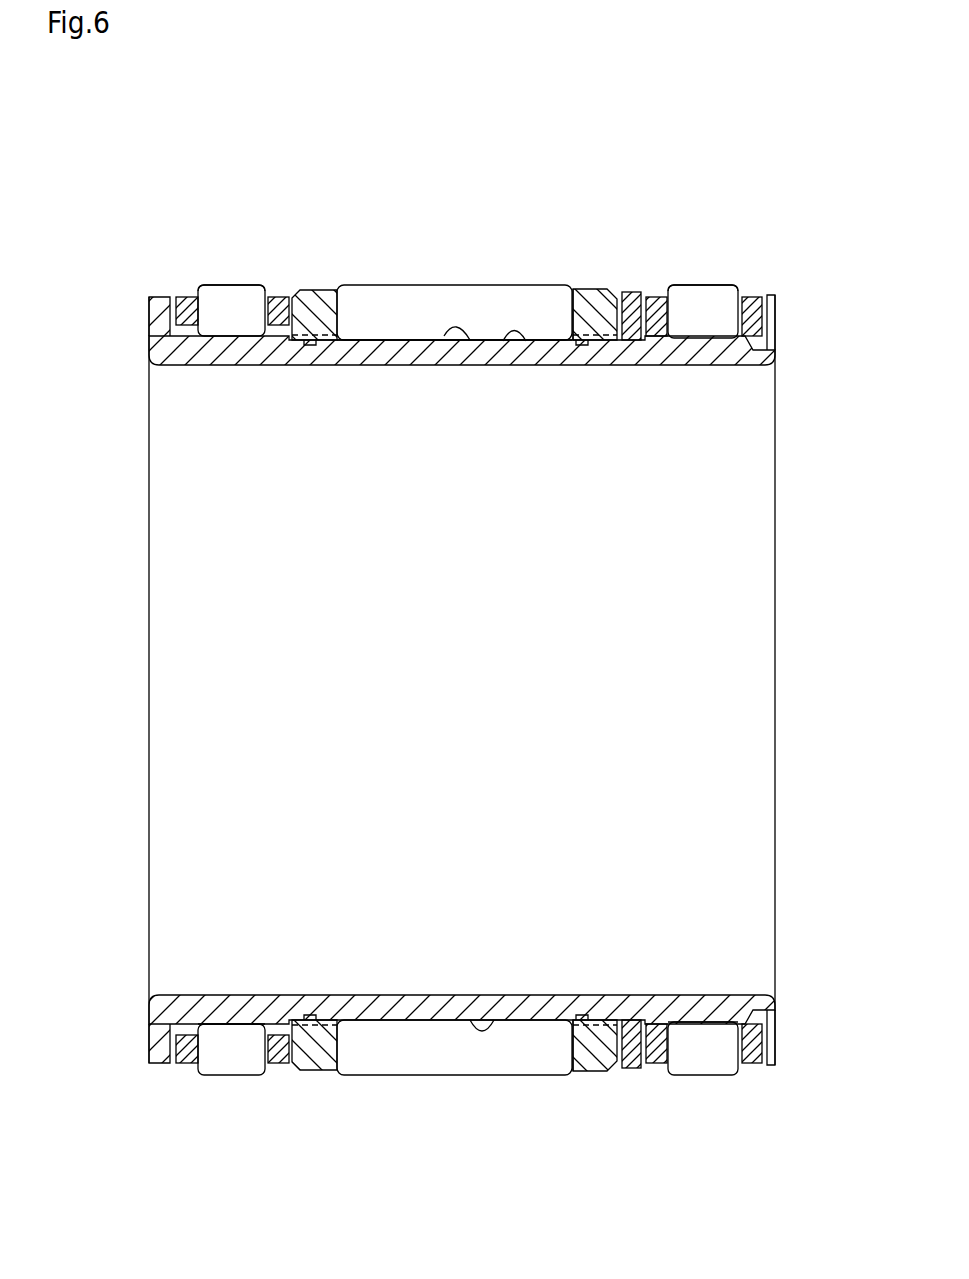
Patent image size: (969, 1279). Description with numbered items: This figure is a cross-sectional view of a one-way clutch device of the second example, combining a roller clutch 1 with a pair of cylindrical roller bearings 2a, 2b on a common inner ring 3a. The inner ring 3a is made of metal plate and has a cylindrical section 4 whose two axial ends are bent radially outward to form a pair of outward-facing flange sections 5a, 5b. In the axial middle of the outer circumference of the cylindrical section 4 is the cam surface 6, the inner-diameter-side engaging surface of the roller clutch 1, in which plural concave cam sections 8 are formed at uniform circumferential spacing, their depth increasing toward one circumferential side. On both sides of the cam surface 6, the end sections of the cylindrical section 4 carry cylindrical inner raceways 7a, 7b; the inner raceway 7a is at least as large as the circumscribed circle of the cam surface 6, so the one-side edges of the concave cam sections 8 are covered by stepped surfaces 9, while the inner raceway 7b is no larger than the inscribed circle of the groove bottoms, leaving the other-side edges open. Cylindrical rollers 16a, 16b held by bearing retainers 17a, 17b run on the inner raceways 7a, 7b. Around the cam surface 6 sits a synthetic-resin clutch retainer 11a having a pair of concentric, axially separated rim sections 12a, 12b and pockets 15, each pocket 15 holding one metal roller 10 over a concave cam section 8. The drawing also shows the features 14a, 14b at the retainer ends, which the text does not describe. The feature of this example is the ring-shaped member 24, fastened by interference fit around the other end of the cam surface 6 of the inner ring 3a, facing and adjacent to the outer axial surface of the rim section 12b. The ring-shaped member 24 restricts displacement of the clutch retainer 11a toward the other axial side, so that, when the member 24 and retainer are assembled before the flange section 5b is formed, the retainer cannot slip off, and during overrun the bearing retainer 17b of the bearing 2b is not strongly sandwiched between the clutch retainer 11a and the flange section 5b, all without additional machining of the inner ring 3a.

The roller clutch 1 is at (448, 285).
The cylindrical roller bearing 2a is at (218, 287).
The cylindrical roller bearing 2b is at (716, 285).
The inner ring 3a is at (394, 354).
The cylindrical section 4 is at (400, 1006).
The outward-facing flange section 5a is at (160, 1032).
The outward-facing flange section 5b is at (771, 1032).
The cam surface 6 is at (443, 338).
The inner raceway 7a is at (242, 1033).
The inner raceway 7b is at (701, 1033).
The concave cam section 8 is at (518, 347).
The stepped surface 9 is at (314, 312).
The roller 10 is at (410, 300).
The clutch retainer 11a is at (597, 300).
The rim section 12a is at (303, 1049).
The rim section 12b is at (595, 1050).
The first recess 14a is at (323, 342).
The second recess 14b is at (584, 341).
The pocket 15 is at (572, 315).
The cylindrical roller 16a is at (245, 303).
The cylindrical roller 16b is at (688, 305).
The bearing retainer 17a is at (182, 303).
The bearing retainer 17b is at (756, 305).
The ring-shaped member 24 is at (630, 312).